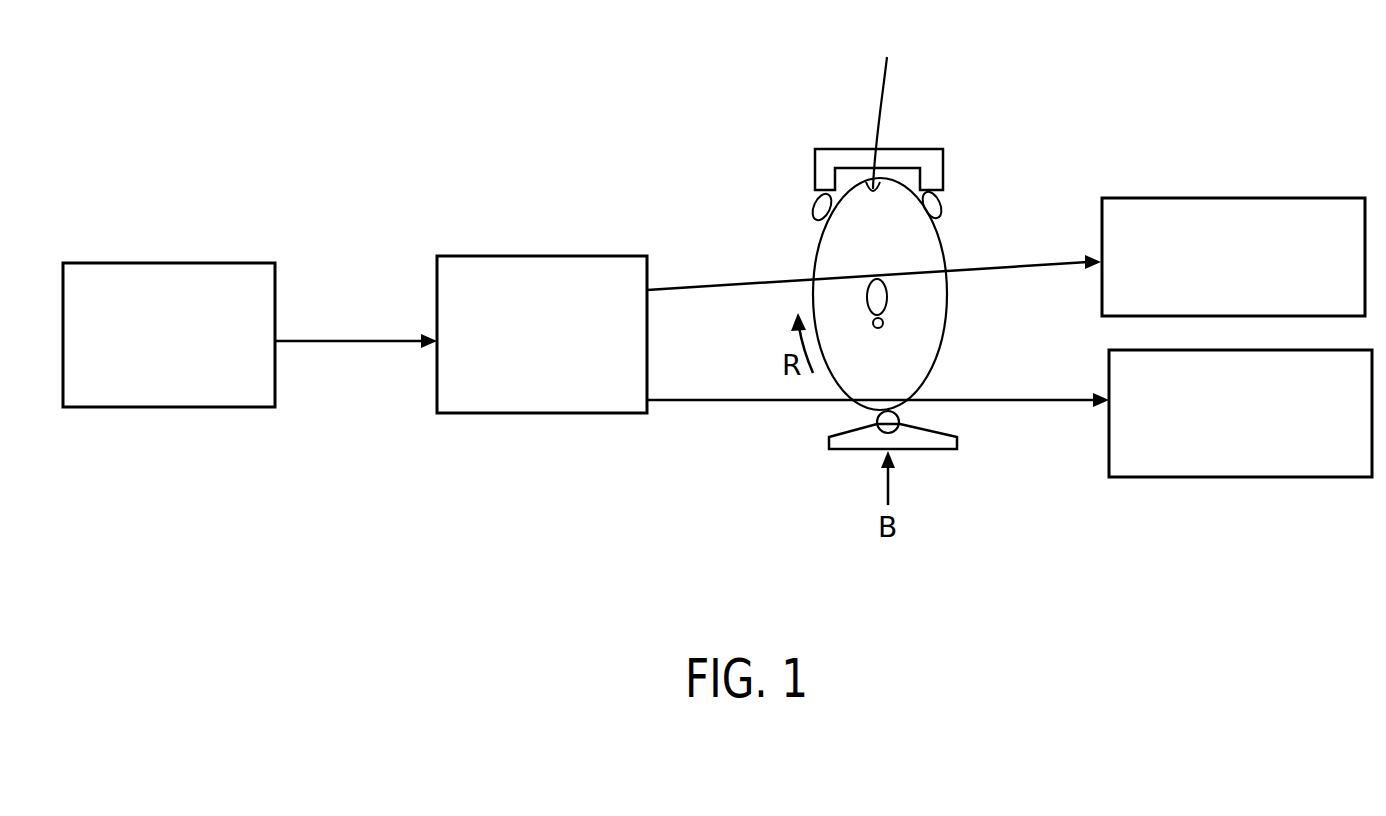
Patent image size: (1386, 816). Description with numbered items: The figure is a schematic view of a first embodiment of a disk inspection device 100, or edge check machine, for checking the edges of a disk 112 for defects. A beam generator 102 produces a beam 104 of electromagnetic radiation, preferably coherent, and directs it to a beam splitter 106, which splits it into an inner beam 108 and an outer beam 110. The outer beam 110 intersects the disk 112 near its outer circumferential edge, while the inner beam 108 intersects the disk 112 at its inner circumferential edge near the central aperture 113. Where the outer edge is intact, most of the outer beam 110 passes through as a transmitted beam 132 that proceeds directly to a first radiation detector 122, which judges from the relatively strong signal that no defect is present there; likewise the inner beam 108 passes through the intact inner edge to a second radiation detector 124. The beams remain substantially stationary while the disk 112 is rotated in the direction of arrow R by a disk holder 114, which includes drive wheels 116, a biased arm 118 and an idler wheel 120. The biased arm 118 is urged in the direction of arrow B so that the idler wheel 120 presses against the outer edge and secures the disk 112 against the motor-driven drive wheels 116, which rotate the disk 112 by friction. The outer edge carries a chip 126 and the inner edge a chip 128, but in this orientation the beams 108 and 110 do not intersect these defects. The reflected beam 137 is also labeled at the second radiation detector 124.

The disk inspection device 100 is at (1302, 122).
The beam generator 102 is at (148, 263).
The beam 104 is at (353, 337).
The beam splitter 106 is at (513, 256).
The inner beam 108 is at (713, 288).
The outer beam 110 is at (708, 402).
The disk 112 is at (947, 332).
The central aperture 113 is at (888, 302).
The disk holder 114 is at (944, 160).
The drive wheels 116 is at (814, 204).
The biased arm 118 is at (937, 452).
The idler wheel 120 is at (902, 413).
The first radiation detector 122 is at (1227, 477).
The second radiation detector 124 is at (1280, 197).
The chip 126 is at (888, 66).
The chip 128 is at (880, 328).
The transmitted beam 132 is at (1035, 402).
The reflected beam 137 is at (1033, 262).